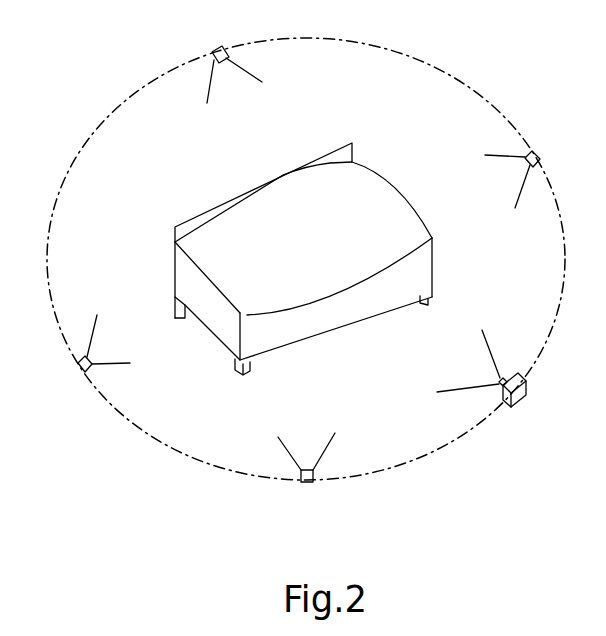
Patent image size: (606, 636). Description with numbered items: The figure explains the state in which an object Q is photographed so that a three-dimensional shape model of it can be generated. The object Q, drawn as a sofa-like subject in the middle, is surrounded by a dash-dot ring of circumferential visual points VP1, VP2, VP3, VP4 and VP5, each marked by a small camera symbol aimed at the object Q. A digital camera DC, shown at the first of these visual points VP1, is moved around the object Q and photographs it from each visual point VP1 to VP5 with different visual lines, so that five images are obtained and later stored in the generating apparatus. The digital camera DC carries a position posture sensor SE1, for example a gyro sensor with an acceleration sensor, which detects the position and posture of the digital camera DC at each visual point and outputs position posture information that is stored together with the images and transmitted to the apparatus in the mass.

The object Q is at (392, 195).
The visual point VP1 is at (516, 397).
The visual point VP2 is at (306, 474).
The visual point VP3 is at (79, 352).
The visual point VP4 is at (225, 58).
The visual point VP5 is at (534, 175).
The digital camera DC is at (517, 405).
The position posture sensor SE1 is at (525, 379).